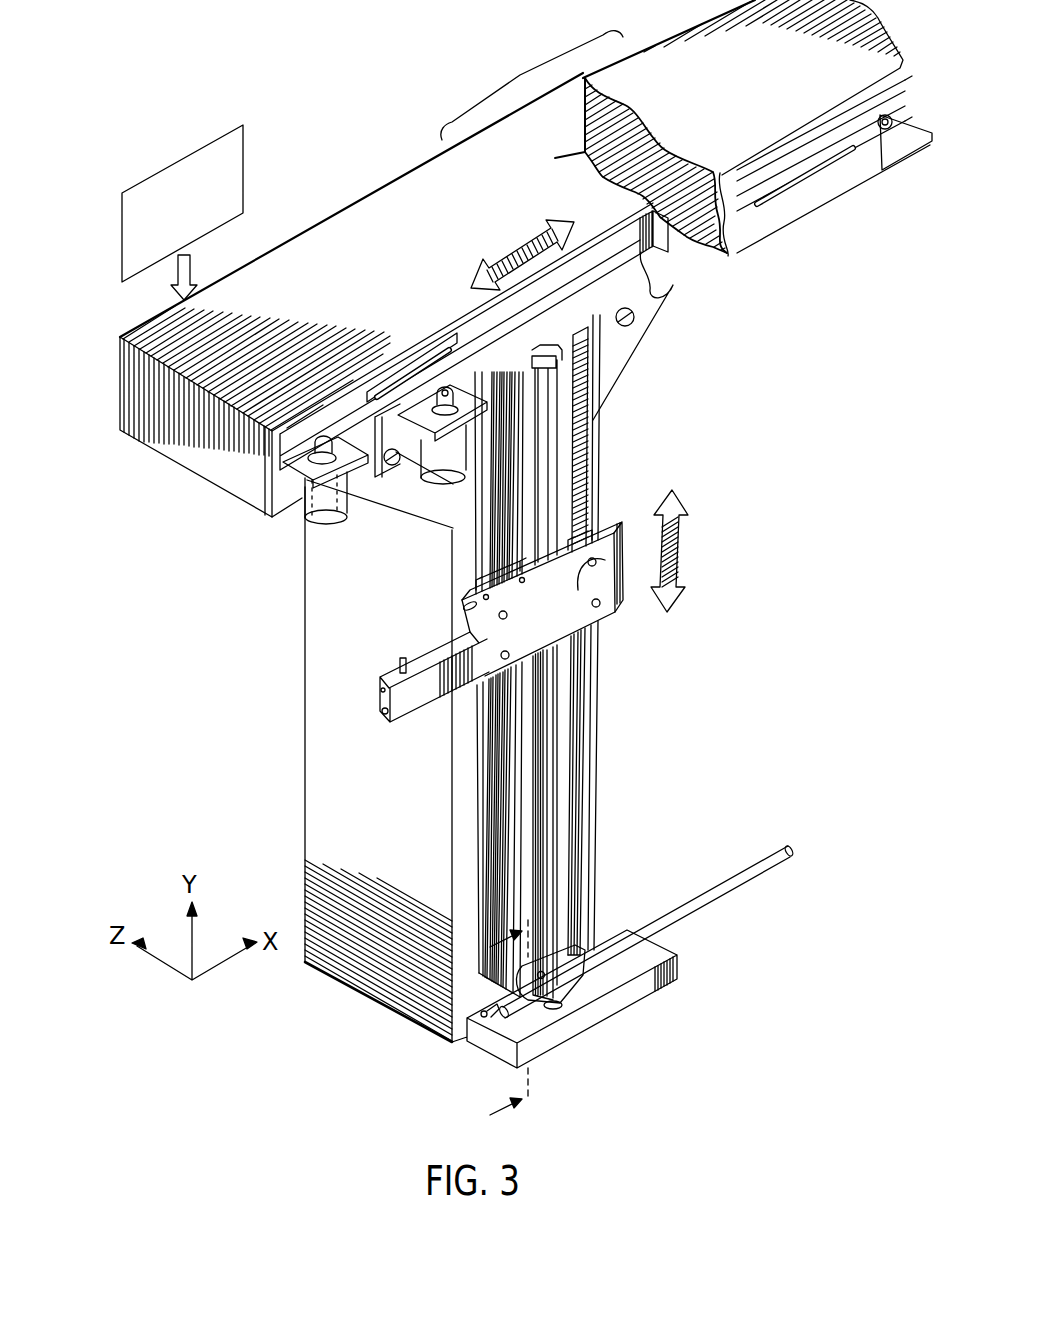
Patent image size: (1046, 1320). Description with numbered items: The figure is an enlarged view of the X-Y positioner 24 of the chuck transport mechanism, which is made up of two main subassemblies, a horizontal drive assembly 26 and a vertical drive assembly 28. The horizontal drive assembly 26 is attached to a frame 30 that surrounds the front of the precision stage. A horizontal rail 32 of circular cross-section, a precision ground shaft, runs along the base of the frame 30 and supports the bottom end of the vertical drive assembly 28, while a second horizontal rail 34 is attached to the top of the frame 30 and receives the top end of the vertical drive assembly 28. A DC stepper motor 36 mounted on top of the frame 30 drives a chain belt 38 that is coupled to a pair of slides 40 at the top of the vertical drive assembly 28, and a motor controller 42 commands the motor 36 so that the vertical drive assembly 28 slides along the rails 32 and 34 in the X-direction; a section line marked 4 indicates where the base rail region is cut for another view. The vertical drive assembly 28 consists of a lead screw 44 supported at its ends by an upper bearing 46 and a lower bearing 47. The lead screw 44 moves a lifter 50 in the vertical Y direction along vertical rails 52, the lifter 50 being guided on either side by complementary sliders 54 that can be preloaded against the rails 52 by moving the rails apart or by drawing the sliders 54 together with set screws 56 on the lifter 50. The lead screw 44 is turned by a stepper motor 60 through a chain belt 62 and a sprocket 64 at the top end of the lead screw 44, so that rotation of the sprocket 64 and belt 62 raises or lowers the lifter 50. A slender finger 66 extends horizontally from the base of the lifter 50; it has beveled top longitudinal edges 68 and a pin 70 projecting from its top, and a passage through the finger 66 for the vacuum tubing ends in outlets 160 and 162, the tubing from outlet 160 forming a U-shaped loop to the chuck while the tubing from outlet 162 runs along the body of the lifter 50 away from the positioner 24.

The section line 4- 4 is at (493, 1027).
The X-Y positioner 24 is at (698, 679).
The horizontal drive assembly 26 is at (732, 150).
The vertical drive assembly 28 is at (606, 797).
The frame 30 is at (318, 273).
The horizontal rail 32 is at (733, 880).
The horizontal rail 34 is at (767, 213).
The DC stepper motor 36 is at (305, 508).
The chain belt 38 is at (807, 180).
The slides 40 is at (388, 467).
The motor controller 42 is at (152, 190).
The lead screw 44 is at (542, 753).
The bearing 46 is at (560, 343).
The bearing 47 is at (583, 980).
The lifter 50 is at (600, 588).
The vertical rails 52 is at (585, 862).
The sliders 54 is at (483, 582).
The set screws 56 is at (505, 616).
The stepper motor 60 is at (420, 480).
The chain belt 62 is at (475, 338).
The sprocket 64 is at (547, 333).
The finger 66 is at (420, 697).
The beveled top longitudinal edges 68 is at (385, 700).
The pin 70 is at (398, 661).
The outlet 160 is at (385, 718).
The outlet 162 is at (462, 607).